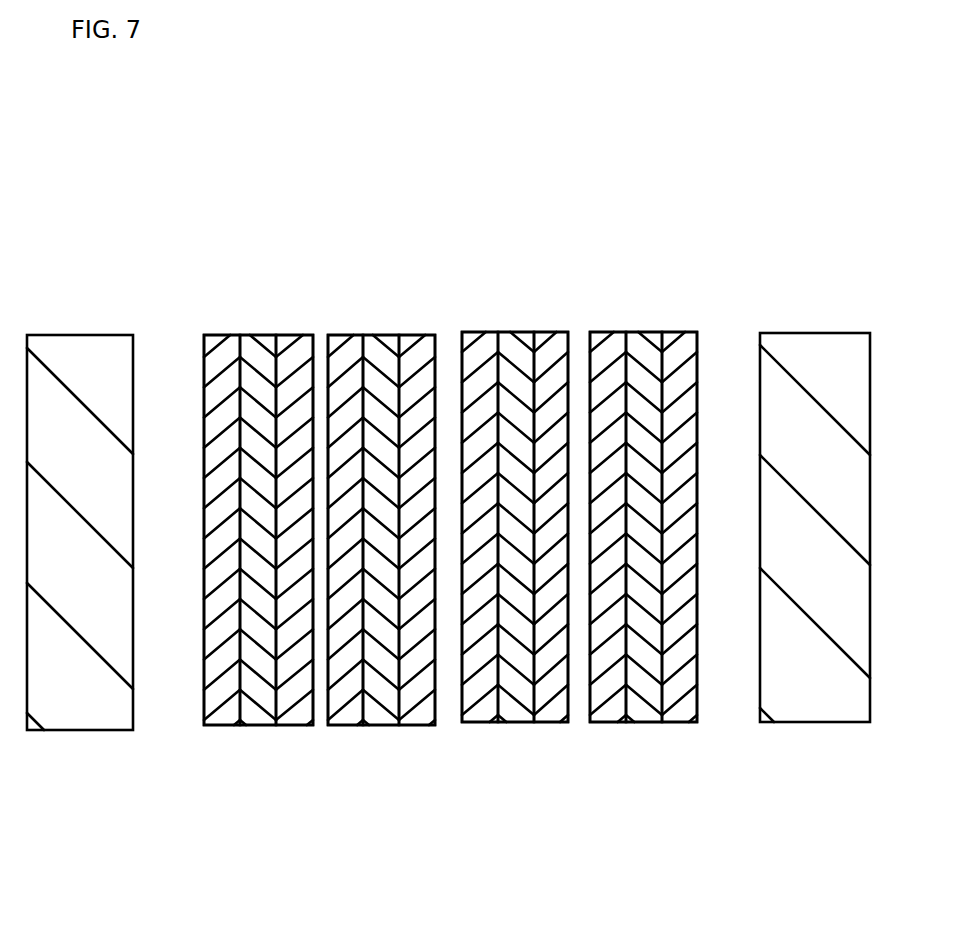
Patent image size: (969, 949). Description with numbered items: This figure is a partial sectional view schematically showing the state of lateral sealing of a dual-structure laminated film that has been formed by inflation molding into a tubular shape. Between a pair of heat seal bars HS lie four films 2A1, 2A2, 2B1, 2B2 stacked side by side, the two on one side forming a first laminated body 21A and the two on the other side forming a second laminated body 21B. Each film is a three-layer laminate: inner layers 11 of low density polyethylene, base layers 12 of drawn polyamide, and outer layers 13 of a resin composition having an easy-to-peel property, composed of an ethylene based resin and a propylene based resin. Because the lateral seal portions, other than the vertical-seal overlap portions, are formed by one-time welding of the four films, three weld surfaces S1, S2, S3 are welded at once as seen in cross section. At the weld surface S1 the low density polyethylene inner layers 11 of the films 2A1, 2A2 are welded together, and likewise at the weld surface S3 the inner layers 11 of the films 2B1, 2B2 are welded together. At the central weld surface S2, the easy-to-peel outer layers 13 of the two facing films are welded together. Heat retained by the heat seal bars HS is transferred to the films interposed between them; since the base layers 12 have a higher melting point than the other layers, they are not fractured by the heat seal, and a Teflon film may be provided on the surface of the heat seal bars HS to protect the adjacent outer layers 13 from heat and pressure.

The heat seal bars HS is at (70, 335).
The inner layers 11 is at (294, 718).
The base layers 12 is at (250, 718).
The outer layers 13 is at (206, 718).
The film 2A1 is at (158, 807).
The film 2A2 is at (382, 603).
The film 2B1 is at (455, 805).
The film 2B2 is at (660, 600).
The first laminated body 21A is at (300, 640).
The second laminated body 21B is at (592, 638).
The weld surface S1 is at (318, 335).
The central weld surface S2 is at (447, 337).
The weld surface S3 is at (577, 335).